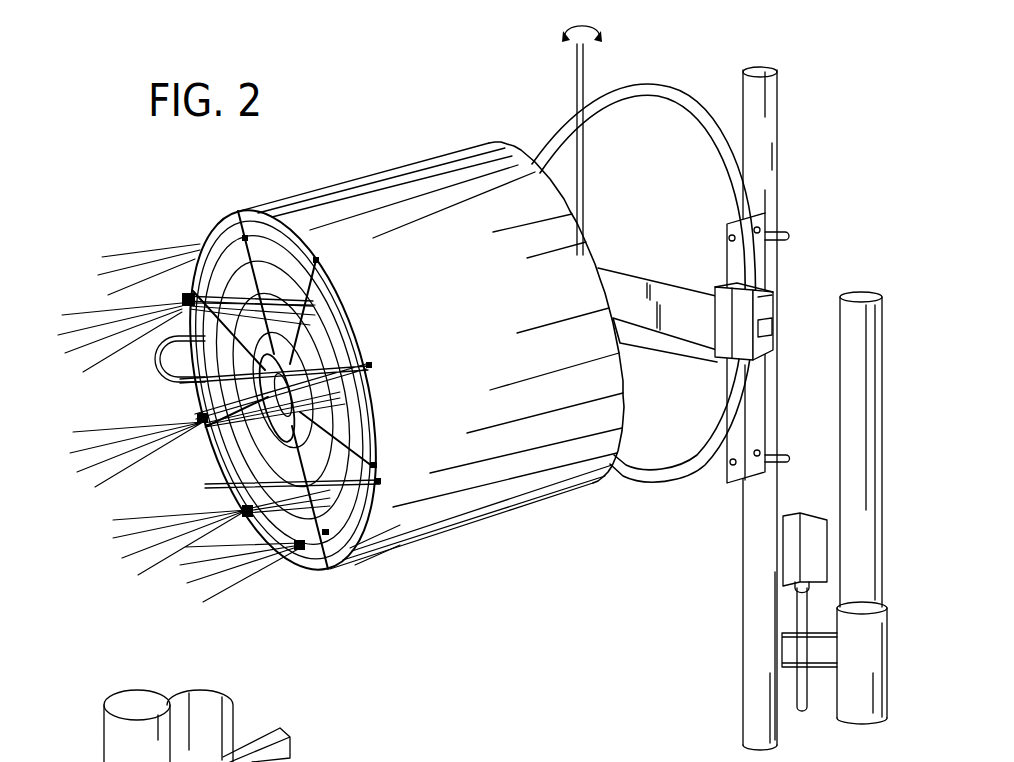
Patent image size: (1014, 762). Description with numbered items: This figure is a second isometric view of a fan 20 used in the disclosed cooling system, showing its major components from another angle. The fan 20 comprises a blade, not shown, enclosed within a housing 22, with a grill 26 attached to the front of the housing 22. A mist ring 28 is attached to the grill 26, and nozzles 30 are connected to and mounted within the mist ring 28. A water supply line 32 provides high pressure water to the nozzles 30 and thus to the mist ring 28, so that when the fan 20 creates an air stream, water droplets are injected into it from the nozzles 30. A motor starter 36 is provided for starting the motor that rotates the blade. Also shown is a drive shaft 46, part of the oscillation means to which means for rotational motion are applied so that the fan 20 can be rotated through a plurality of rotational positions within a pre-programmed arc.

The fan 20 is at (390, 124).
The housing 22 is at (446, 341).
The grill 26 is at (238, 212).
The mist ring 28 is at (276, 242).
The nozzles 30 is at (194, 272).
The water supply line 32 is at (164, 382).
The motor starter 36 is at (768, 310).
The drive shaft 46 is at (587, 77).